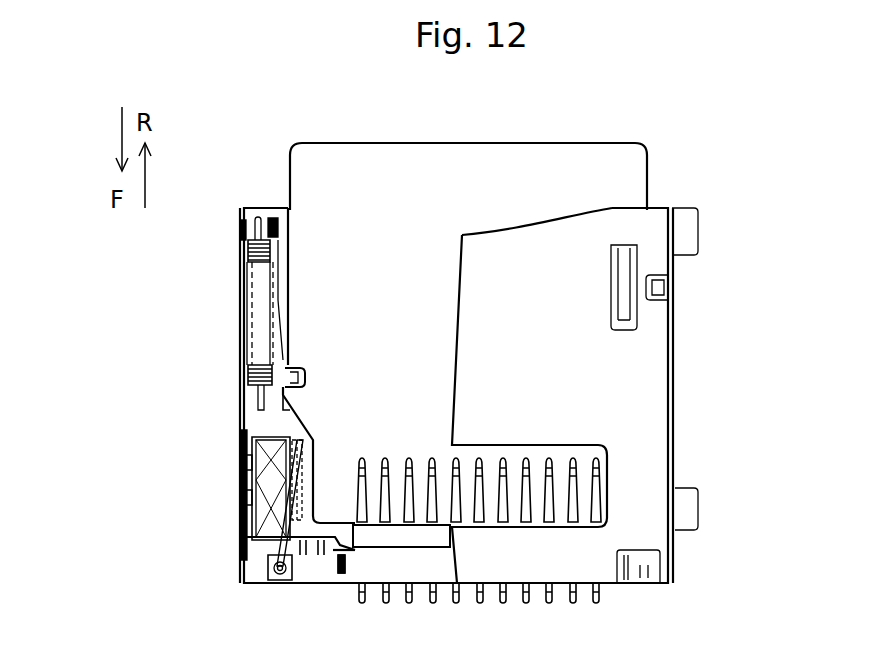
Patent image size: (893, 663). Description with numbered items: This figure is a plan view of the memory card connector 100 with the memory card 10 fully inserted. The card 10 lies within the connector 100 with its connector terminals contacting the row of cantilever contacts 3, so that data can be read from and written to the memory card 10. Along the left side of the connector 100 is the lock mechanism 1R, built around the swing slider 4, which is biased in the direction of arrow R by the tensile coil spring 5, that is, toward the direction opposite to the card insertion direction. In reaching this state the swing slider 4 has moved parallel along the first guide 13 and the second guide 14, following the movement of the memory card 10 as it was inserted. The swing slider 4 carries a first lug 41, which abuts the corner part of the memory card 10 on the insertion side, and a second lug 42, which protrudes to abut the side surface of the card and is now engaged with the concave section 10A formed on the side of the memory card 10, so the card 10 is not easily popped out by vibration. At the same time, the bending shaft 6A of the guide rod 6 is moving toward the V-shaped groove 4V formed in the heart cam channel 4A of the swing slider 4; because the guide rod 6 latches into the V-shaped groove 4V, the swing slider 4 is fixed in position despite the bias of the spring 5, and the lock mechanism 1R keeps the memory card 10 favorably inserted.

The lock mechanism 1R is at (130, 402).
The cantilever contacts 3 is at (612, 605).
The swing slider 4 is at (250, 430).
The heart cam channel 4A is at (250, 496).
The V-shaped groove 4V is at (287, 408).
The tensile coil spring 5 is at (250, 250).
The guide rod 6 is at (250, 560).
The bending shaft 6A is at (248, 462).
The memory card 10 is at (650, 186).
The concave section 10A is at (290, 368).
The first guide 13 is at (282, 580).
The second guide 14 is at (303, 547).
The first lug 41 is at (340, 568).
The second lug 42 is at (288, 345).
The connector 100 is at (675, 393).